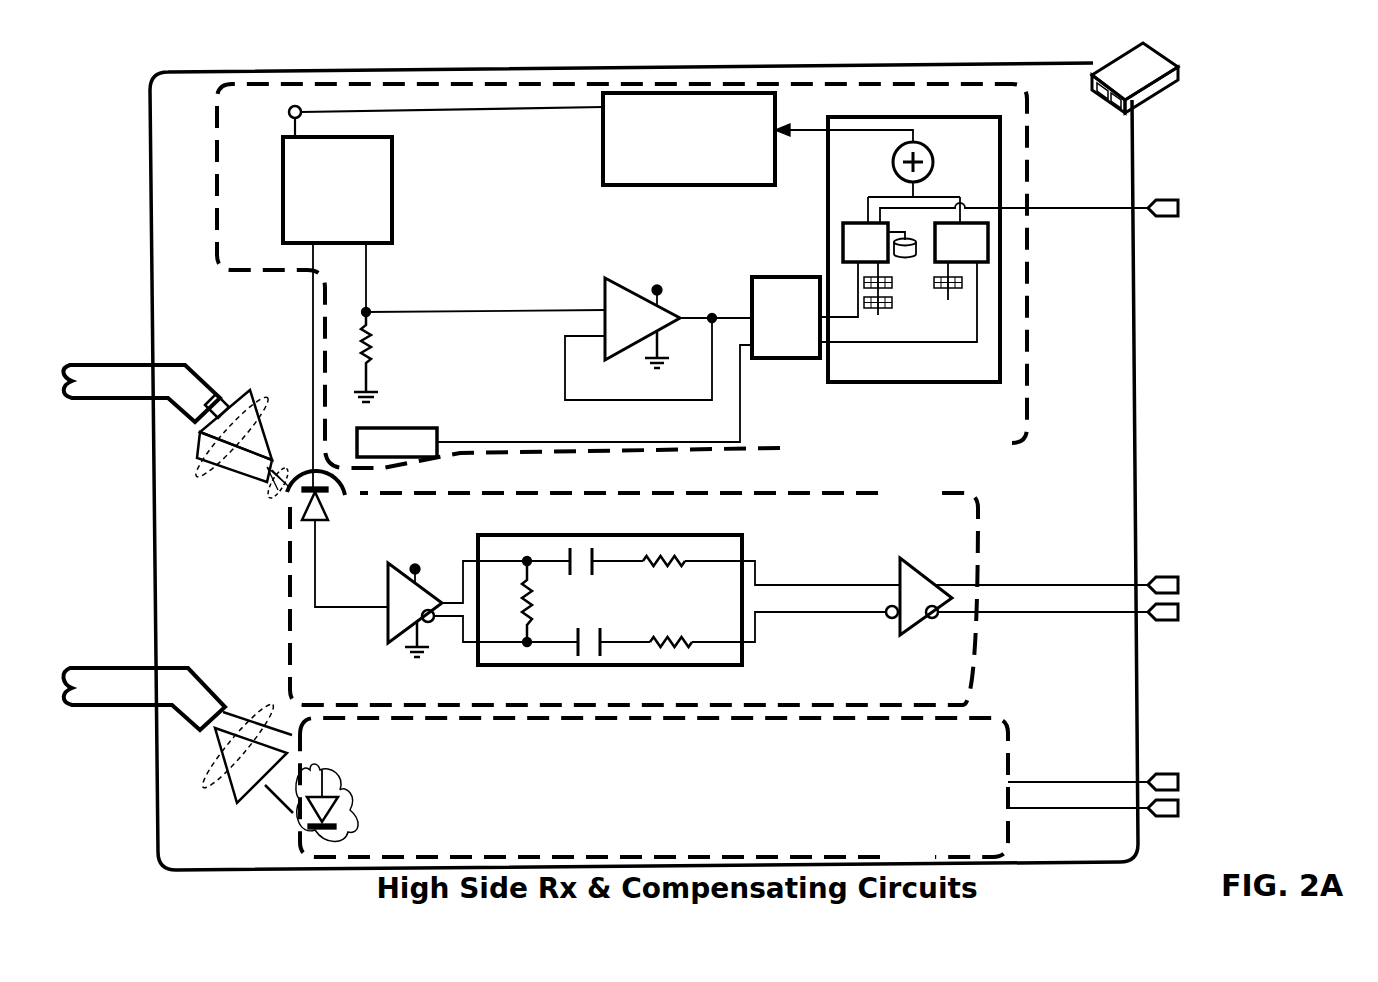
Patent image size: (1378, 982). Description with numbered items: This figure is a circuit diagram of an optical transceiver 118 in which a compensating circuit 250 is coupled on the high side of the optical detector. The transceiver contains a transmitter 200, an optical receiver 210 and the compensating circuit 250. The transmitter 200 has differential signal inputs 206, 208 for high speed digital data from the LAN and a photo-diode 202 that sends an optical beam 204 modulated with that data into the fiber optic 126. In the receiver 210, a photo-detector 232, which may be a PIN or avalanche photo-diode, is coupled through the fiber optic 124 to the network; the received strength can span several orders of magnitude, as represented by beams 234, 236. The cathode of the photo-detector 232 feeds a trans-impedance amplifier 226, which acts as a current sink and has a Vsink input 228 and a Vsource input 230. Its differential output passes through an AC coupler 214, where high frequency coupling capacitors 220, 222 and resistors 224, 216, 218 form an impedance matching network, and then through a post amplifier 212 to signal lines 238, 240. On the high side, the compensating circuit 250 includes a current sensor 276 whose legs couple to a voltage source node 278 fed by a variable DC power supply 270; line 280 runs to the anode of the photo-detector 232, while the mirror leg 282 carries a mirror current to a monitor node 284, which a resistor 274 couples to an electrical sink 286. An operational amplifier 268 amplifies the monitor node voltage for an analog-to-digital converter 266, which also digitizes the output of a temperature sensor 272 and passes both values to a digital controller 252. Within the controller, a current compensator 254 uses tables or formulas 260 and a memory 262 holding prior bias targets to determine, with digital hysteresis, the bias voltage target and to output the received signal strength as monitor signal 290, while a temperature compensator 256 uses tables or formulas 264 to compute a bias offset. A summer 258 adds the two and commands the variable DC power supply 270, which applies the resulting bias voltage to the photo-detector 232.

The optical transceiver 118 is at (1135, 130).
The fiber optic 124 is at (120, 365).
The fiber optic 126 is at (115, 668).
The transmitter 200 is at (1003, 722).
The photo-diode 202 is at (348, 815).
The optical beam 204 is at (210, 785).
The differential signal input 206 is at (1155, 774).
The differential signal input 208 is at (1155, 816).
The optical receiver 210 is at (980, 510).
The post amplifier 212 is at (905, 558).
The AC coupler 214 is at (742, 535).
The resistor 216 is at (675, 565).
The resistor 218 is at (675, 638).
The high frequency coupling capacitor 220 is at (592, 628).
The high frequency coupling capacitor 222 is at (588, 575).
The resistor 224 is at (520, 600).
The trans-impedance amplifier 226 is at (388, 632).
The Vsink input 228 is at (430, 652).
The Vsource input 230 is at (413, 563).
The photo-detector 232 is at (330, 520).
The received optical beam 234 is at (272, 495).
The received optical beam 236 is at (205, 482).
The signal line 238 is at (1155, 620).
The signal line 240 is at (1155, 577).
The compensating circuit 250 is at (1028, 100).
The digital controller 252 is at (828, 120).
The current compensator 254 is at (846, 222).
The temperature compensator 256 is at (940, 222).
The summer 258 is at (925, 148).
The tables and/or formulas 260 is at (885, 312).
The memory 262 is at (910, 256).
The tables or formulas 264 is at (950, 296).
The analog-to-digital converter 266 is at (765, 277).
The operational amplifier 268 is at (632, 263).
The variable DC power supply 270 is at (603, 156).
The temperature sensor 272 is at (410, 428).
The resistor 274 is at (374, 350).
The current sensor 276 is at (393, 212).
The voltage source node 278 is at (289, 112).
The line 280 is at (312, 302).
The mirror leg 282 is at (368, 275).
The monitor node 284 is at (370, 316).
The electrical sink 286 is at (380, 392).
The monitor signal 290 is at (1152, 198).